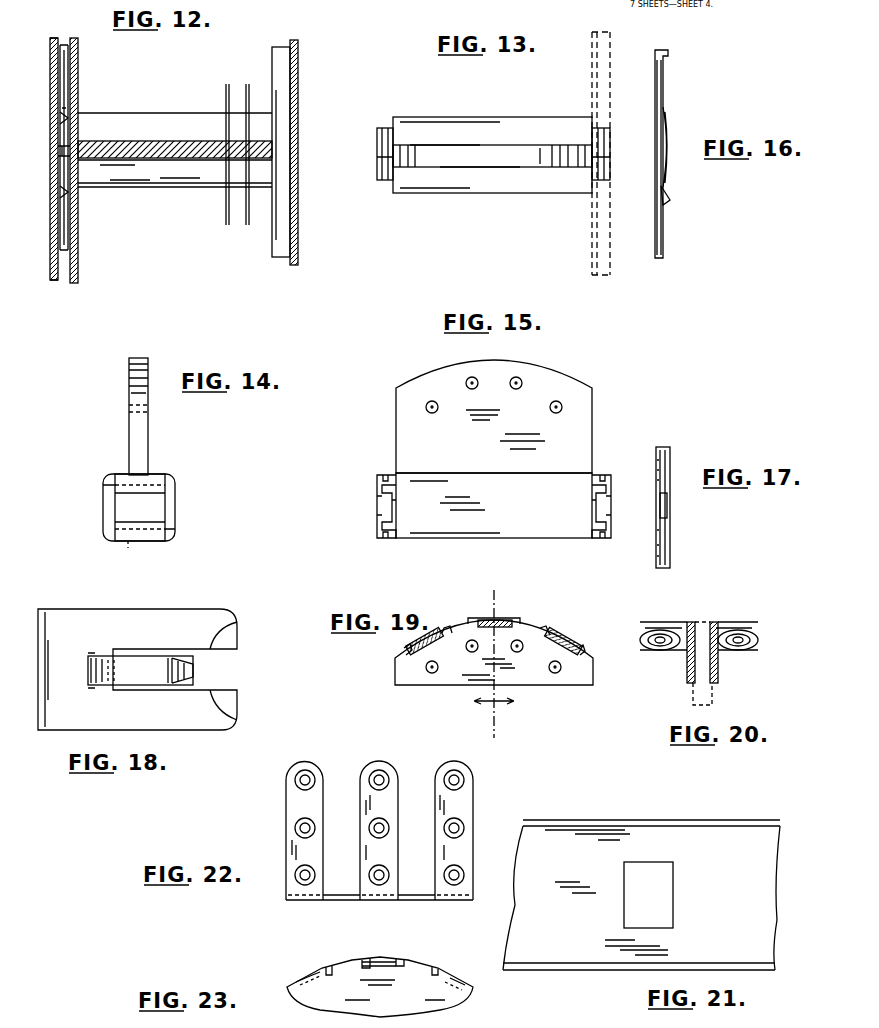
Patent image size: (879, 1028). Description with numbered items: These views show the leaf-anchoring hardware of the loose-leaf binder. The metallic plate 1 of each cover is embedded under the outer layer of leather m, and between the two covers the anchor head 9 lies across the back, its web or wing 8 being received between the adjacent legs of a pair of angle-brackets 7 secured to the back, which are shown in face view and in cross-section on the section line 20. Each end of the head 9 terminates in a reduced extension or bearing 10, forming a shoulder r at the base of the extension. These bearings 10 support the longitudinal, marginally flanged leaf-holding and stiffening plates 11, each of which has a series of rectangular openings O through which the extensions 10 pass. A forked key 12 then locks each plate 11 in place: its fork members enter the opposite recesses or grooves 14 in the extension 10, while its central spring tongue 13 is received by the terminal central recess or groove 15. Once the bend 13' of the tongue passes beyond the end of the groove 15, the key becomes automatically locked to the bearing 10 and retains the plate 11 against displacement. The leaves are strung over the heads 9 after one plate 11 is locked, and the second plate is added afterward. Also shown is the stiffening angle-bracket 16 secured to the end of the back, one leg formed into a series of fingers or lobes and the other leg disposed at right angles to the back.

In FIG. 12, the metallic plate 1 is at (56, 280).
In FIG. 12, the outer layer of leather m is at (50, 105).
In FIG. 20, the angle-bracket 7 is at (688, 632).
In FIG. 19, the angle-bracket 7 is at (528, 632).
In FIG. 12, the web or wing 8 is at (122, 141).
In FIG. 13, the web or wing 8 is at (447, 152).
In FIG. 14, the web or wing 8 is at (135, 430).
In FIG. 15, the web or wing 8 is at (578, 398).
In FIG. 20, the web or wing 8 is at (712, 693).
In FIG. 12, the anchor head 9 is at (170, 170).
In FIG. 13, the anchor head 9 is at (463, 180).
In FIG. 14, the anchor head 9 is at (176, 513).
In FIG. 15, the anchor head 9 is at (450, 516).
In FIG. 12, the reduced extension or bearing 10 is at (60, 150).
In FIG. 13, the reduced extension or bearing 10 is at (390, 160).
In FIG. 14, the reduced extension or bearing 10 is at (155, 488).
In FIG. 15, the reduced extension or bearing 10 is at (392, 513).
In FIG. 12, the leaf-holding and stiffening plate 11 is at (79, 62).
In FIG. 13, the leaf-holding and stiffening plate 11 is at (602, 50).
In FIG. 21, the leaf-holding and stiffening plate 11 is at (712, 843).
In FIG. 12, the forked key 12 is at (68, 218).
In FIG. 16, the forked key 12 is at (660, 85).
In FIG. 17, the forked key 12 is at (664, 465).
In FIG. 18, the forked key 12 is at (54, 622).
In FIG. 12, the spring tongue 13 is at (43, 126).
In FIG. 16, the spring tongue 13 is at (691, 144).
In FIG. 17, the spring tongue 13 is at (696, 518).
In FIG. 18, the spring tongue 13 is at (140, 653).
In FIG. 12, the bend of the tongue 13' is at (42, 196).
In FIG. 16, the bend of the tongue 13' is at (696, 202).
In FIG. 18, the bend of the tongue 13' is at (214, 670).
In FIG. 13, the recess or groove 14 is at (385, 128).
In FIG. 14, the recess or groove 14 is at (130, 541).
In FIG. 15, the recess or groove 14 is at (385, 475).
In FIG. 14, the terminal central recess or groove 15 is at (130, 512).
In FIG. 15, the terminal central recess or groove 15 is at (378, 507).
In FIG. 22, the angle-bracket 16 is at (388, 797).
In FIG. 23, the angle-bracket 16 is at (345, 966).
In FIG. 19, the section line 20 is at (494, 665).
In FIG. 14, the shoulder r is at (115, 493).
In FIG. 15, the shoulder r is at (392, 520).
In FIG. 21, the rectangular opening O is at (655, 872).